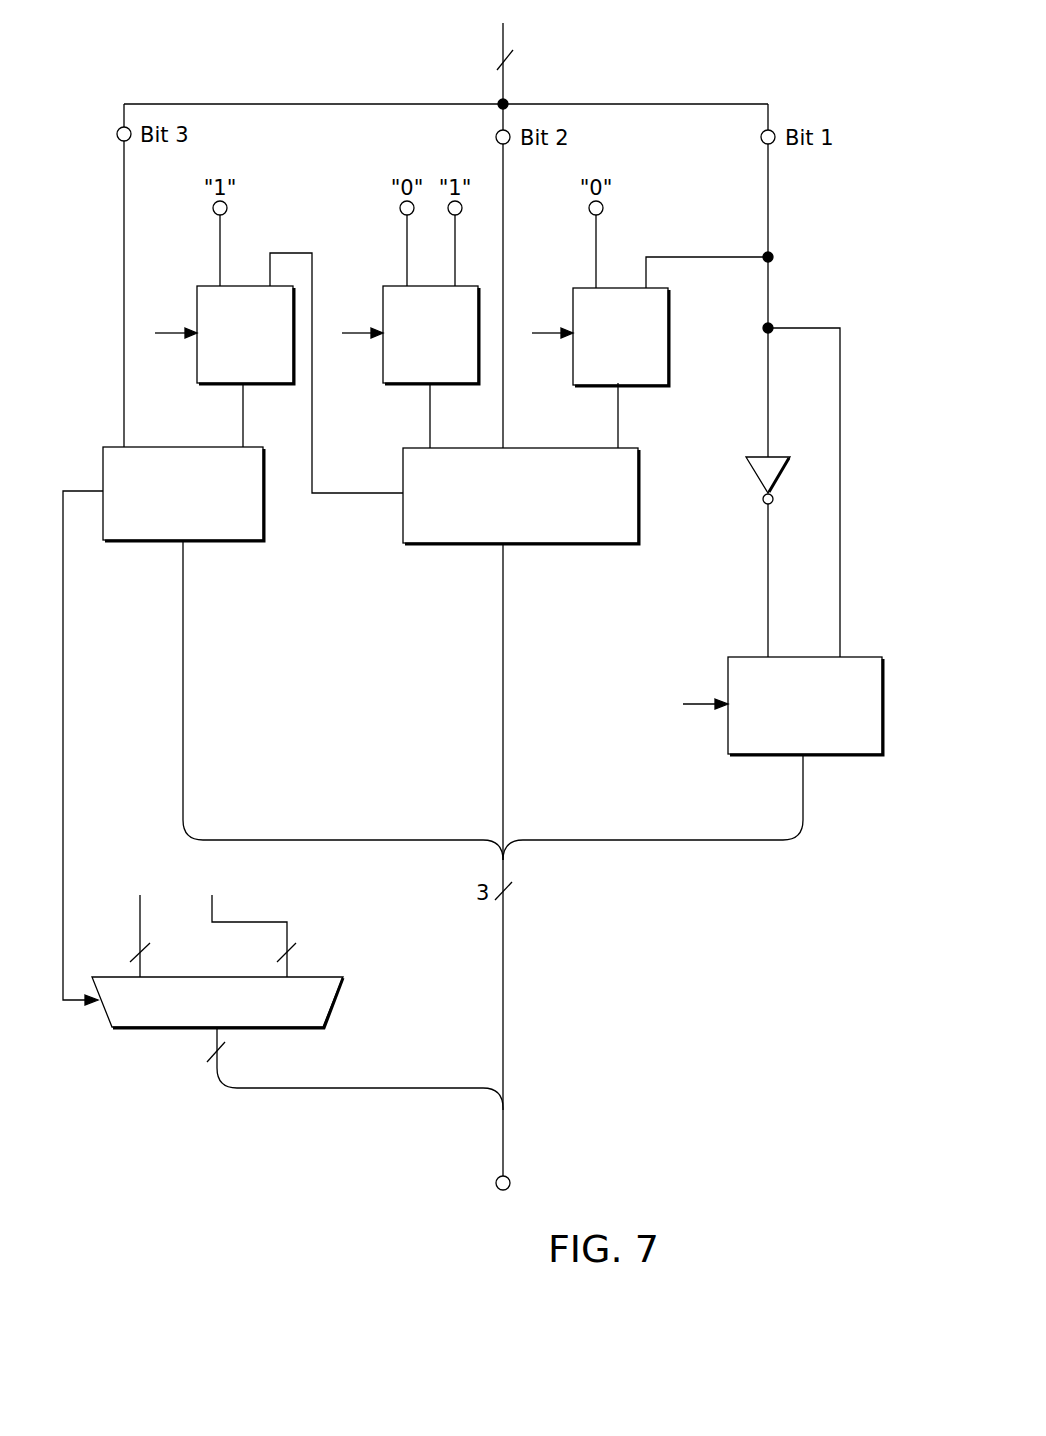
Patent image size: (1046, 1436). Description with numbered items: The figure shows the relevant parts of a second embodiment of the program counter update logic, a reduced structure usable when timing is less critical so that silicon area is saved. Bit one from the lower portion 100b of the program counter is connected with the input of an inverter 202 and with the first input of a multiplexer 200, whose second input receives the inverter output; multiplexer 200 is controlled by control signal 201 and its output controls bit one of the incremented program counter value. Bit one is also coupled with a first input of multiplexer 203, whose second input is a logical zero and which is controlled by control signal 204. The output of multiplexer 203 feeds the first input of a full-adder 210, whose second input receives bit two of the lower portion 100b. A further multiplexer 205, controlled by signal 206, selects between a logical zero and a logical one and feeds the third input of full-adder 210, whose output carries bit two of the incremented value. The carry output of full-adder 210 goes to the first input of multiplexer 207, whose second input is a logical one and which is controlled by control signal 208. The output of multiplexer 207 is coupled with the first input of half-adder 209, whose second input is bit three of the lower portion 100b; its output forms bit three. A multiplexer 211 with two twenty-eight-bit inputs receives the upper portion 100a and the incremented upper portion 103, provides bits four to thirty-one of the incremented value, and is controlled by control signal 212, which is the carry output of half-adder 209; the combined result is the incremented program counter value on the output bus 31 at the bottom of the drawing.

The lower portion of program counter 100b is at (503, 33).
The control signal 208 is at (170, 323).
The multiplexer 207 is at (218, 388).
The control signal 206 is at (356, 323).
The multiplexer 205 is at (410, 388).
The control signal 204 is at (545, 323).
The multiplexer 203 is at (645, 388).
The inverter 202 is at (755, 478).
The control signal 201 is at (699, 693).
The multiplexer 200 is at (882, 680).
The half-adder 209 is at (215, 542).
The full-adder 210 is at (565, 545).
The control signal 212 is at (66, 1004).
The upper portion of program counter 100a is at (138, 905).
The incremented upper portion 103 is at (210, 905).
The multiplexer 211 is at (338, 1003).
The 31-bit output bus 31 is at (513, 1130).